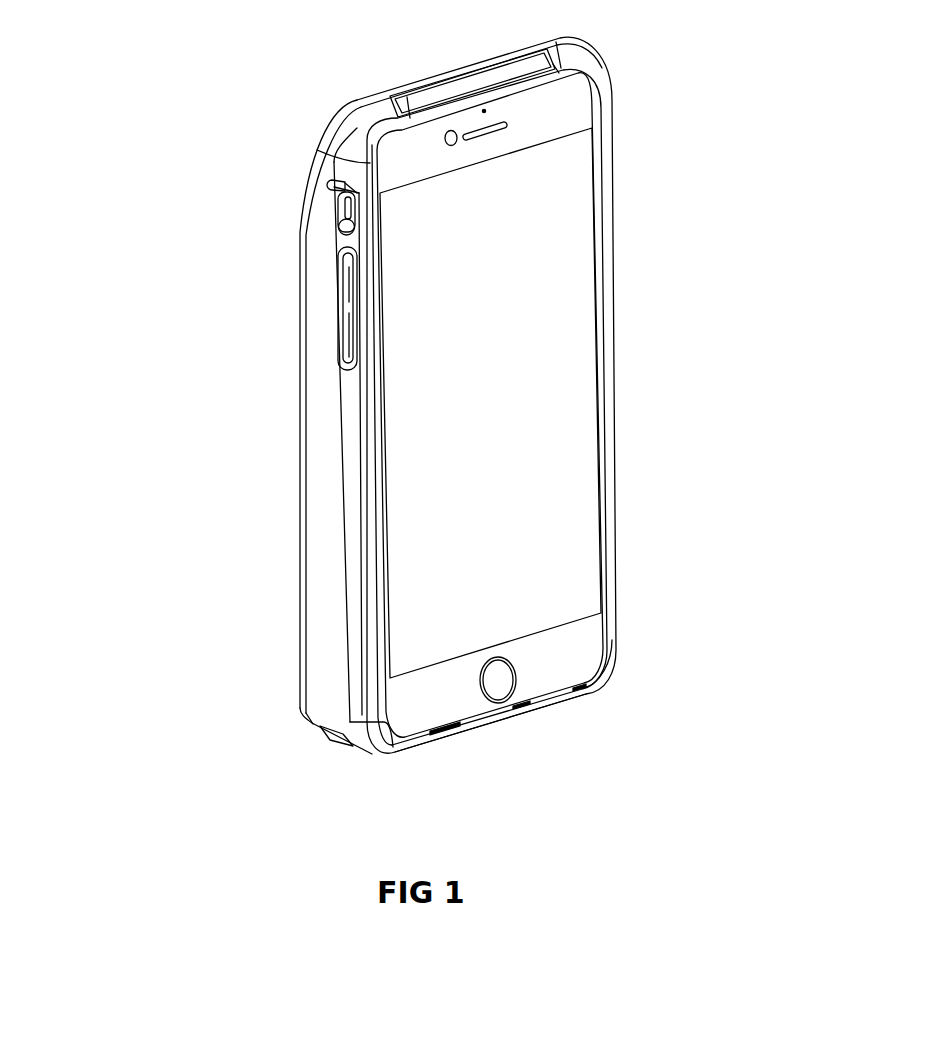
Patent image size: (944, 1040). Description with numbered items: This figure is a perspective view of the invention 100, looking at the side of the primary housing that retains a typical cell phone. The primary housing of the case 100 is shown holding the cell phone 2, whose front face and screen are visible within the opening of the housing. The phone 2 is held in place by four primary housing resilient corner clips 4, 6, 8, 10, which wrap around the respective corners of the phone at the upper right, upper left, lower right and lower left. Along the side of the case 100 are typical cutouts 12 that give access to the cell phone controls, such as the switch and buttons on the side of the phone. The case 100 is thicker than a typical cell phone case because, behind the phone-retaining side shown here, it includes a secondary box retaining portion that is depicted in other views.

The invention 100 is at (273, 723).
The cell phone 2 is at (558, 372).
The resilient corner clip 4 is at (588, 62).
The resilient corner clip 6 is at (362, 142).
The resilient corner clip 8 is at (621, 659).
The resilient corner clip 10 is at (389, 757).
The cutouts 12 is at (332, 266).